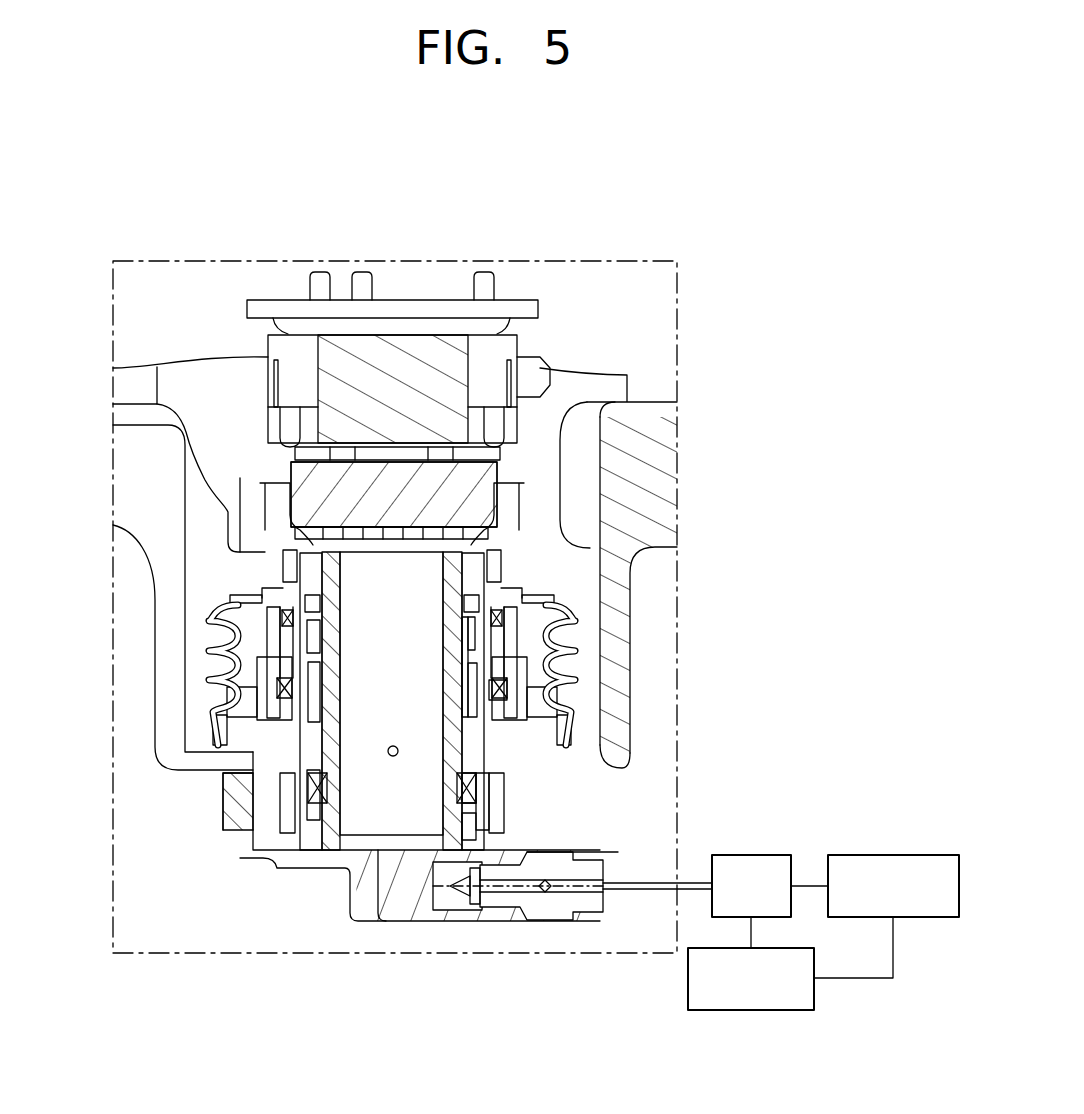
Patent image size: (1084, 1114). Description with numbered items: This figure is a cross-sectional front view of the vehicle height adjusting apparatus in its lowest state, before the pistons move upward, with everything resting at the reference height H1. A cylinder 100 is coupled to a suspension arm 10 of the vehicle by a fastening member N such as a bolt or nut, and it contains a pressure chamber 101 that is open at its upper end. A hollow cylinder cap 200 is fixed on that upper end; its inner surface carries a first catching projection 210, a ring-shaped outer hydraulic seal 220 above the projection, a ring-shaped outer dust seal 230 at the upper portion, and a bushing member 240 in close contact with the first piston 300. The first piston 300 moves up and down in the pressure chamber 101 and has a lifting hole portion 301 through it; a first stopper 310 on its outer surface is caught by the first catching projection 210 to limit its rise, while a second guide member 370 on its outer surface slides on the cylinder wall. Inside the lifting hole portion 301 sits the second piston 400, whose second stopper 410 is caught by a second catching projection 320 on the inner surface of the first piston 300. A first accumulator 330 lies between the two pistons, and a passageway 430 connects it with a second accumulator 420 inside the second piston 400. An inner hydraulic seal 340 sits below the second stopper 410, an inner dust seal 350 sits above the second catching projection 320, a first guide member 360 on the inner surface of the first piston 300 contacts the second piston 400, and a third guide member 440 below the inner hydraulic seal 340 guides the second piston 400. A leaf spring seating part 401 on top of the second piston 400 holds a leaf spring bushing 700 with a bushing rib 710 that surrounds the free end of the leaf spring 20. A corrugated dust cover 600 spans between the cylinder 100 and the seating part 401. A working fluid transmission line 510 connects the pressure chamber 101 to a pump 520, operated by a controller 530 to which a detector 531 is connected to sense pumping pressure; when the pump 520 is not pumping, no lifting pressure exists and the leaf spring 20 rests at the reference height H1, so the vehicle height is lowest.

The suspension arm 10 is at (637, 514).
The leaf spring 20 is at (445, 355).
The cylinder 100 is at (262, 875).
The pressure chamber 101 is at (470, 800).
The cylinder cap 200 is at (270, 667).
The first catching projection 210 is at (227, 717).
The outer hydraulic seal 220 is at (280, 693).
The outer dust seal 230 is at (500, 595).
The bushing member 240 is at (500, 622).
The first piston 300 is at (308, 838).
The lifting hole portion 301 is at (307, 740).
The first stopper 310 is at (303, 838).
The second catching projection 320 is at (470, 655).
The first accumulator 330 is at (398, 749).
The inner hydraulic seal 340 is at (305, 795).
The inner dust seal 350 is at (565, 556).
The first guide member 360 is at (503, 610).
The second guide member 370 is at (460, 832).
The second piston 400 is at (330, 577).
The leaf spring seating part 401 is at (603, 473).
The second stopper 410 is at (490, 778).
The second accumulator 420 is at (355, 860).
The passageway 430 is at (505, 765).
The third guide member 440 is at (470, 905).
The working fluid transmission line 510 is at (640, 893).
The pump 520 is at (786, 853).
The controller 530 is at (865, 855).
The detector 531 is at (753, 1013).
The dust cover 600 is at (215, 610).
The leaf spring bushing 700 is at (470, 482).
The bushing rib 710 is at (550, 380).
The reference height H1 is at (589, 849).
The fastening member N is at (223, 787).